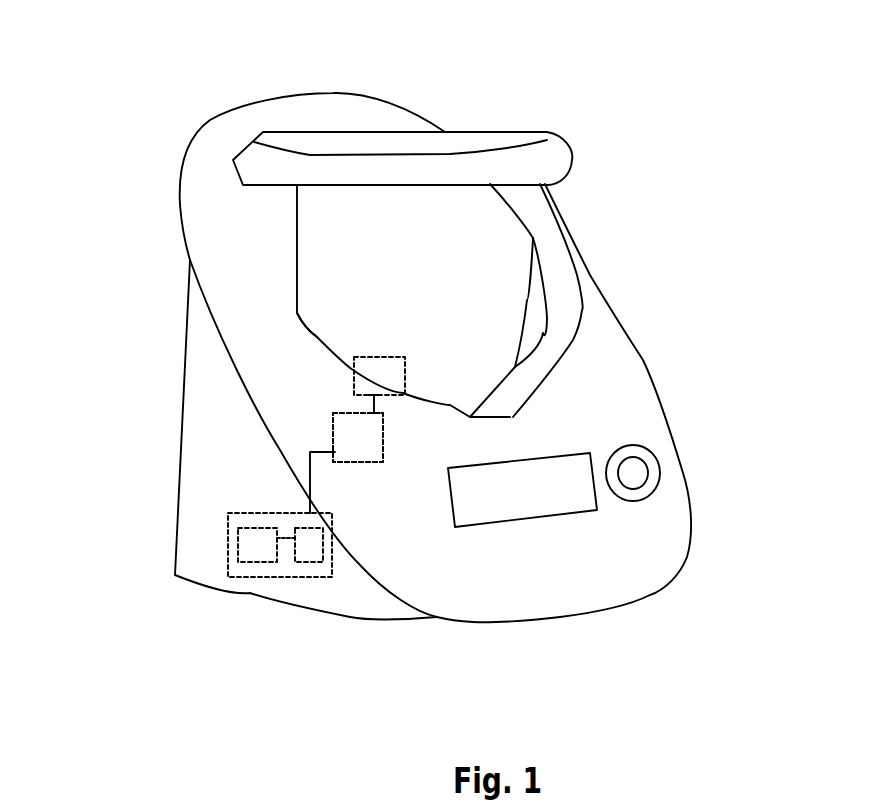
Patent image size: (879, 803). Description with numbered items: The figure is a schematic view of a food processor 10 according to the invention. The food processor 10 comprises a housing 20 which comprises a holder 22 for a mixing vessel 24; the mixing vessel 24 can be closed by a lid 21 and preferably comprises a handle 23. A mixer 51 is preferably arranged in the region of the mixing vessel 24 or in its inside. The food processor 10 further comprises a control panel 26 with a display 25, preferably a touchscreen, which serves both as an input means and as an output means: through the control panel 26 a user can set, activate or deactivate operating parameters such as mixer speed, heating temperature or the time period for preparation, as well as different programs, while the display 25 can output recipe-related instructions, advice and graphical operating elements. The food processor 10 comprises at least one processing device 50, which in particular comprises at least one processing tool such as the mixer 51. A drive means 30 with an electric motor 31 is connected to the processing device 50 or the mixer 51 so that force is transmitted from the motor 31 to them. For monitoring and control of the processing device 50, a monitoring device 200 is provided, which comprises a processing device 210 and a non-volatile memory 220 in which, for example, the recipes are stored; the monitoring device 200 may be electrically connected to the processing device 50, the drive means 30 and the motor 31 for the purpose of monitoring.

The food processor 10 is at (167, 80).
The housing 20 is at (180, 413).
The lid 21 is at (503, 140).
The holder 22 is at (303, 326).
The handle 23 is at (570, 292).
The mixing vessel 24 is at (503, 247).
The display 25 is at (508, 513).
The control panel 26 is at (575, 498).
The drive means 30 is at (357, 460).
The motor 31 is at (390, 573).
The processing device 50 is at (303, 378).
The mixer 51 is at (353, 378).
The monitoring device 200 is at (262, 578).
The processing device 210 is at (240, 548).
The memory 220 is at (305, 562).